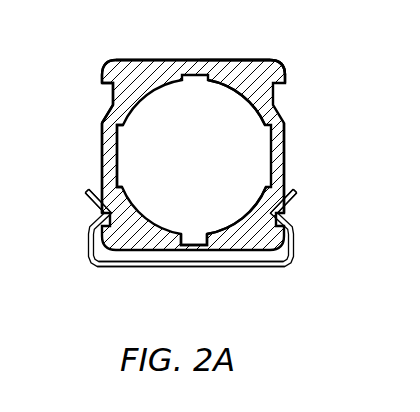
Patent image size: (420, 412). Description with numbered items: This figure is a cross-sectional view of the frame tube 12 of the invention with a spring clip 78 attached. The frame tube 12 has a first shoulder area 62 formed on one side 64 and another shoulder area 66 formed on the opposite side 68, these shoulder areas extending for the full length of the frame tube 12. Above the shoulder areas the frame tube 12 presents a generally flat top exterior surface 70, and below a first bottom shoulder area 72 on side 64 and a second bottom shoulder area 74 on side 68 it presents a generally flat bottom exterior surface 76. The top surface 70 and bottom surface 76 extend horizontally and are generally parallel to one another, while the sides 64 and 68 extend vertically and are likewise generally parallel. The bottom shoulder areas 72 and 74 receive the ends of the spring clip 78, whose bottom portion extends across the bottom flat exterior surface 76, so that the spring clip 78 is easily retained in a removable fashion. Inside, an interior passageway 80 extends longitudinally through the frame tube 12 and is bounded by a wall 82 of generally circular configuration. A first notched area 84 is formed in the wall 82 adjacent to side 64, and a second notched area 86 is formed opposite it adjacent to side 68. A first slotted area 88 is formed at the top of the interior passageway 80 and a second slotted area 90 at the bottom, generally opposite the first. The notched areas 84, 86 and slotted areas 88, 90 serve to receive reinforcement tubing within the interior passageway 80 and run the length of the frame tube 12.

The frame tube 12 is at (308, 137).
The first shoulder area 62 is at (283, 98).
The side 64 is at (287, 173).
The shoulder area 66 is at (110, 87).
The opposite side 68 is at (100, 158).
The flat exterior surface 70 is at (180, 58).
The first bottom shoulder area 72 is at (282, 224).
The second bottom shoulder area 74 is at (90, 222).
The bottom flat exterior surface 76 is at (262, 266).
The spring clip 78 is at (170, 266).
The interior passageway 80 is at (204, 168).
The wall 82 is at (232, 98).
The first notched area 84 is at (260, 162).
The second notched area 86 is at (120, 162).
The first slotted area 88 is at (217, 60).
The second slotted area 90 is at (192, 232).